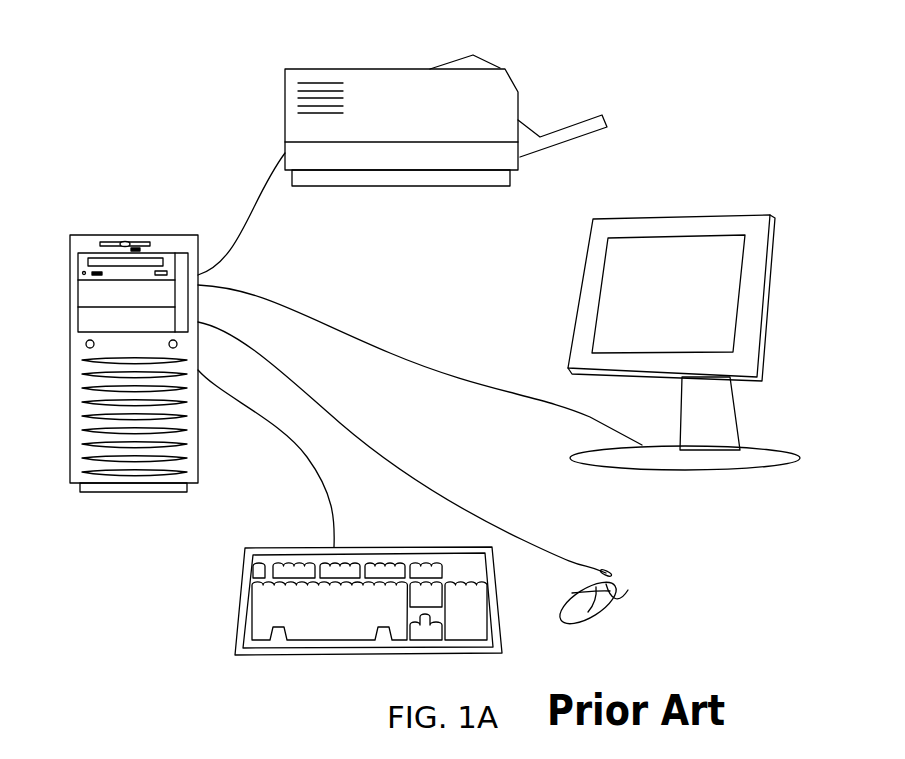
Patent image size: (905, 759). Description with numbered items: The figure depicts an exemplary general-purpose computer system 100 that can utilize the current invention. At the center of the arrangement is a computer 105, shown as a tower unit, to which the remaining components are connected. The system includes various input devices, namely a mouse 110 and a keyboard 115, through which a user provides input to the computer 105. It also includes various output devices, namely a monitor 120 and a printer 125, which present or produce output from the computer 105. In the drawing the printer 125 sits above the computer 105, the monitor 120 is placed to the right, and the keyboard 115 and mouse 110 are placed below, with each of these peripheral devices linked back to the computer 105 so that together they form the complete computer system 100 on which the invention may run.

The general-purpose computer system 100 is at (172, 97).
The computer 105 is at (87, 237).
The mouse 110 is at (628, 590).
The keyboard 115 is at (238, 590).
The monitor 120 is at (703, 215).
The printer 125 is at (518, 92).